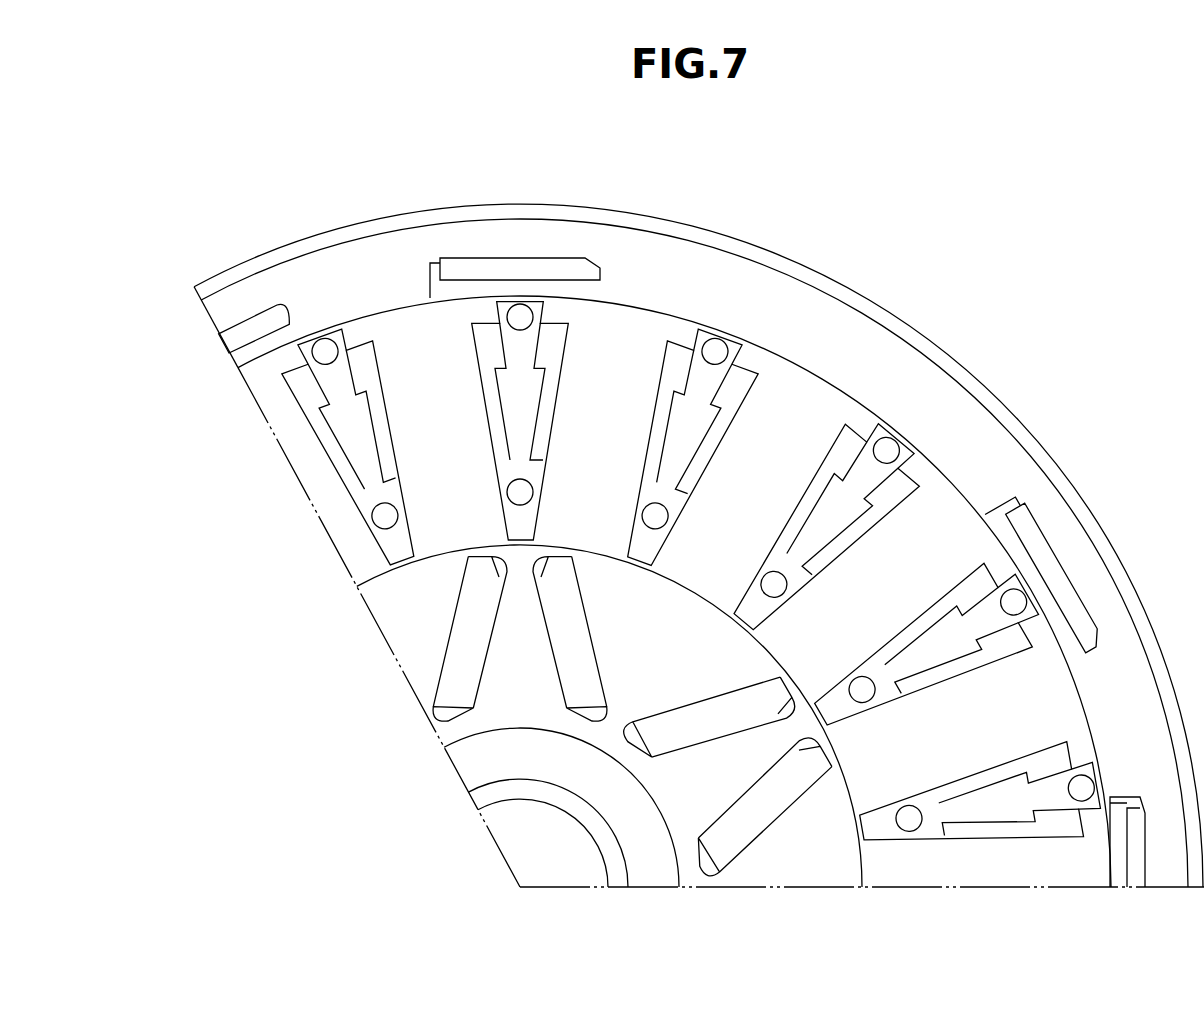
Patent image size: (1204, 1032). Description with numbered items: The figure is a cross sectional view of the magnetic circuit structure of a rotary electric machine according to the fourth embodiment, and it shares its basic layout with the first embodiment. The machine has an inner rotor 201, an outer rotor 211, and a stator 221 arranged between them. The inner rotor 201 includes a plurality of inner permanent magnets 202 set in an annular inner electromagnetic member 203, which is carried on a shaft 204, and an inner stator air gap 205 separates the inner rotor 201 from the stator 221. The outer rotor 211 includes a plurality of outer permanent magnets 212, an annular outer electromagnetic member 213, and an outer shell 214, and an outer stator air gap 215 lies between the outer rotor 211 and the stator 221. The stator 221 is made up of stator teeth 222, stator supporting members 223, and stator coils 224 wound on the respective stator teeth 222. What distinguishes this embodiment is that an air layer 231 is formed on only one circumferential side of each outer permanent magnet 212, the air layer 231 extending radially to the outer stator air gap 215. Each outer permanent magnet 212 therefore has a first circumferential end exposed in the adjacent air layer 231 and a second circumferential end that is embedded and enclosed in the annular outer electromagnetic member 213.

The inner rotor 201 is at (412, 615).
The inner permanent magnets 202 is at (457, 657).
The annular inner electromagnetic member 203 is at (450, 730).
The shaft 204 is at (470, 760).
The inner stator air gap 205 is at (357, 583).
The outer rotor 211 is at (230, 313).
The outer permanent magnets 212 is at (527, 262).
The annular outer electromagnetic member 213 is at (368, 265).
The outer shell 214 is at (192, 303).
The outer stator air gap 215 is at (266, 356).
The stator 221 is at (317, 462).
The stator teeth 222 is at (932, 520).
The stator supporting members 223 is at (770, 585).
The stator coils 224 is at (860, 425).
The air layer 231 is at (437, 262).